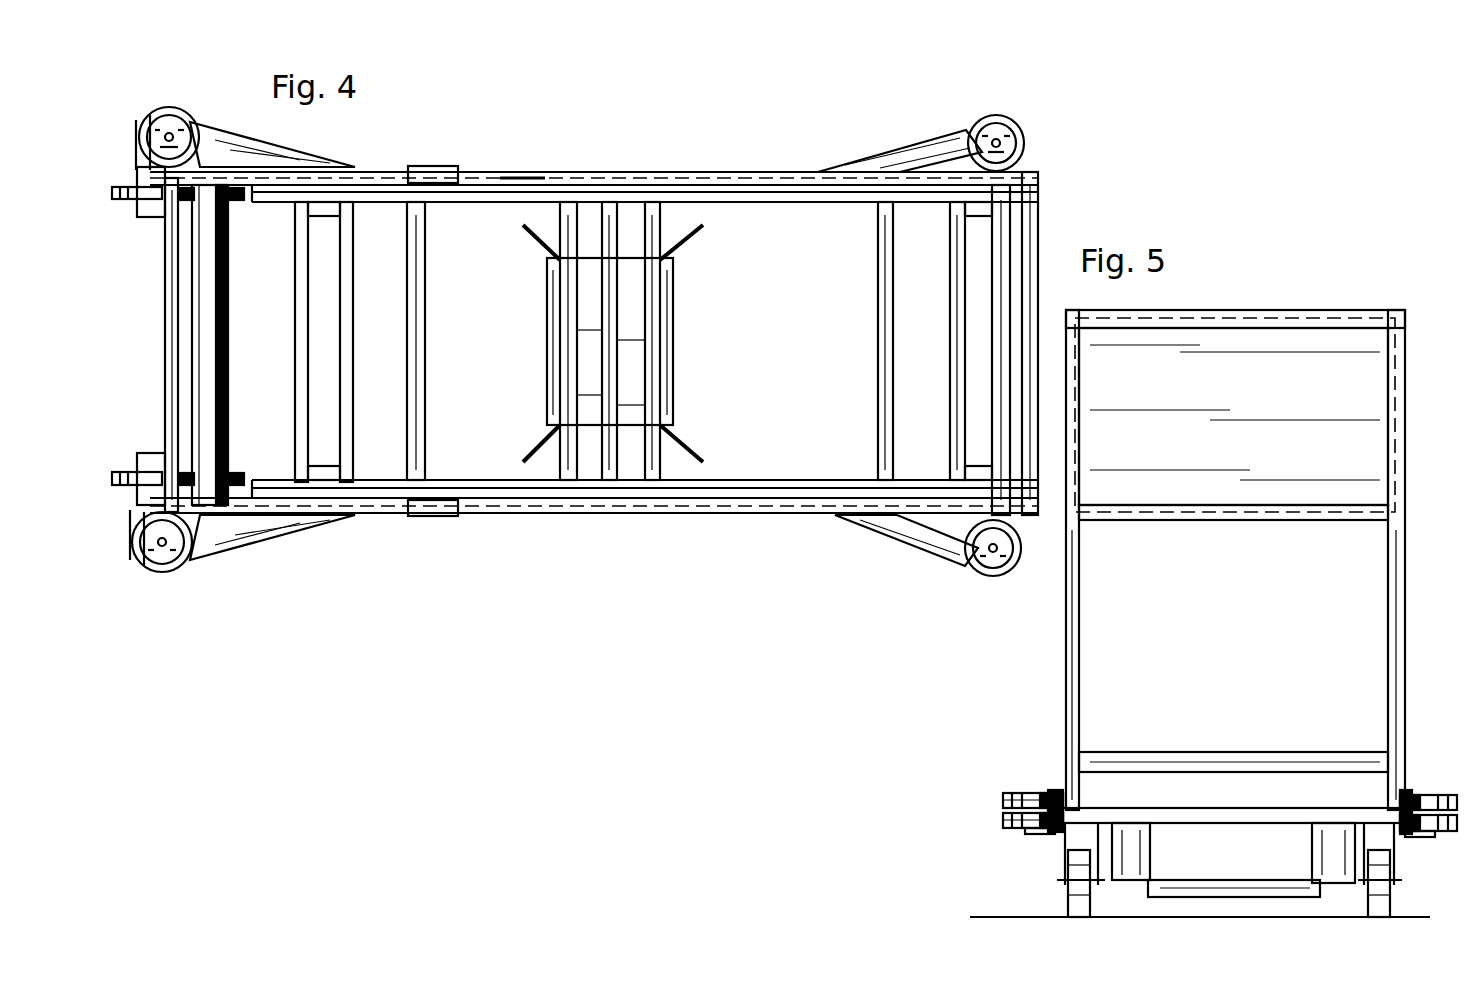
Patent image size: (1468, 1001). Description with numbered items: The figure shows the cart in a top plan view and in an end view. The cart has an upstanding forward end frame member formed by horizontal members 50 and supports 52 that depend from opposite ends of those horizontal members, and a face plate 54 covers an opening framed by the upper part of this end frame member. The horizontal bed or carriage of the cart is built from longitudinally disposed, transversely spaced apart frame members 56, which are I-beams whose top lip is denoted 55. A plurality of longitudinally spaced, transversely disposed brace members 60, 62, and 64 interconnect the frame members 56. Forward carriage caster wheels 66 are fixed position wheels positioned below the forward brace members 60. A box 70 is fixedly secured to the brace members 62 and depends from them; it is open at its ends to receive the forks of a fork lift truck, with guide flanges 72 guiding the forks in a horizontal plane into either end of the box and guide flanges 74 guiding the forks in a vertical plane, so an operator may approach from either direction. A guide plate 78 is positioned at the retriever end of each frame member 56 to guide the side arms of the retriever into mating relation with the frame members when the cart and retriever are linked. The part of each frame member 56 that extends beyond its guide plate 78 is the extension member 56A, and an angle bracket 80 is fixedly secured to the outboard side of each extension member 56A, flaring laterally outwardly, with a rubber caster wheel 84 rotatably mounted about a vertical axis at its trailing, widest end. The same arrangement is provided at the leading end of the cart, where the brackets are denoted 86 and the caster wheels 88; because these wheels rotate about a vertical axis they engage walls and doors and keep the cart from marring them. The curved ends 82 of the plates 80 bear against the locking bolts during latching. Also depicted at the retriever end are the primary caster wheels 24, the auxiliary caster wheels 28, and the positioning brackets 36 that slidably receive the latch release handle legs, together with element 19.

In FIG. 4, the frame side member 19 is at (228, 314).
In FIG. 4, the primary caster wheel 24 is at (240, 203).
In FIG. 4, the auxiliary caster wheel 28 is at (122, 197).
In FIG. 4, the positioning bracket 36 is at (170, 305).
In FIG. 4, the horizontal member 50 is at (1032, 203).
In FIG. 5, the horizontal member 50 is at (1305, 312).
In FIG. 5, the support 52 is at (1407, 518).
In FIG. 4, the face plate 54 is at (1006, 283).
In FIG. 5, the face plate 54 is at (1173, 343).
In FIG. 4, the top lip 55 is at (703, 172).
In FIG. 4, the frame member 56 is at (770, 172).
In FIG. 4, the extension member 56A is at (372, 172).
In FIG. 4, the brace member 60 is at (958, 233).
In FIG. 4, the brace member 62 is at (531, 339).
In FIG. 4, the brace member 64 is at (879, 229).
In FIG. 5, the forward carriage caster wheel 66 is at (1070, 905).
In FIG. 4, the box 70 is at (650, 340).
In FIG. 5, the box 70 is at (1212, 865).
In FIG. 4, the guide flange 72 is at (612, 343).
In FIG. 5, the guide flange 72 is at (1120, 823).
In FIG. 4, the guide flange 74 is at (611, 341).
In FIG. 5, the guide flange 74 is at (1210, 812).
In FIG. 4, the guide plate 78 is at (447, 166).
In FIG. 4, the angle bracket 80 is at (276, 148).
In FIG. 5, the angle bracket 80 is at (1042, 834).
In FIG. 4, the curved end 82 is at (142, 132).
In FIG. 5, the curved end 82 is at (1050, 792).
In FIG. 4, the rubber caster wheel 84 is at (194, 125).
In FIG. 5, the rubber caster wheel 84 is at (1005, 822).
In FIG. 4, the bracket 86 is at (908, 158).
In FIG. 5, the bracket 86 is at (1003, 816).
In FIG. 4, the caster wheel 88 is at (982, 120).
In FIG. 5, the caster wheel 88 is at (1012, 795).